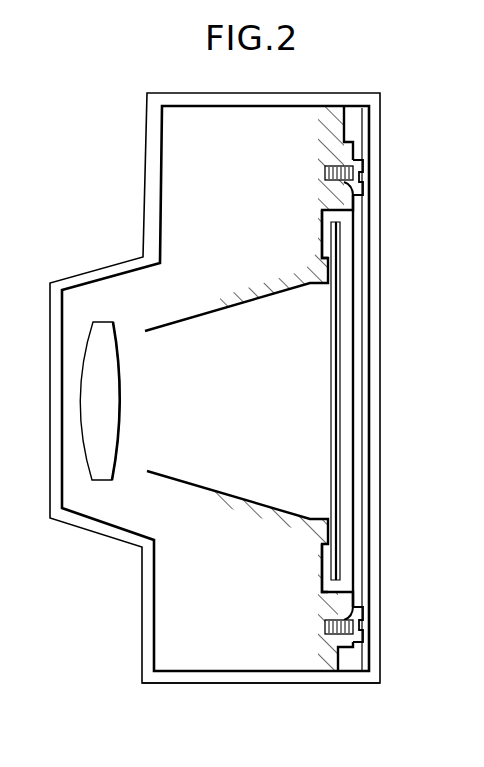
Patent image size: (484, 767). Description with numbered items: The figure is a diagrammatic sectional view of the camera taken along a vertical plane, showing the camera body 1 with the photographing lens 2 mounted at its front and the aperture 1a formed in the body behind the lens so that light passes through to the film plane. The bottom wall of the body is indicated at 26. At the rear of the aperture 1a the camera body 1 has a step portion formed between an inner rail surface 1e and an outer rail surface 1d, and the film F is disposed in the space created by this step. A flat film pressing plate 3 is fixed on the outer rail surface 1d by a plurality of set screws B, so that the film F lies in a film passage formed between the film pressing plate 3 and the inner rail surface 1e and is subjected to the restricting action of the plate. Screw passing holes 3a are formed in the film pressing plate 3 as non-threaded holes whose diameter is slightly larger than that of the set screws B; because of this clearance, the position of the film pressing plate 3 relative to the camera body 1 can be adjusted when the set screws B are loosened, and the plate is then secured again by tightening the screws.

The camera body 1 is at (245, 662).
The bottom wall of camera body 26 is at (168, 677).
The photographing lens 2 is at (75, 383).
The aperture 1a is at (331, 340).
The inner rail surface 1e is at (335, 268).
The outer rail surface 1d is at (357, 212).
The film F is at (332, 360).
The film pressing plate 3 is at (348, 414).
The screw passing holes 3a is at (352, 192).
The set screws B is at (365, 158).